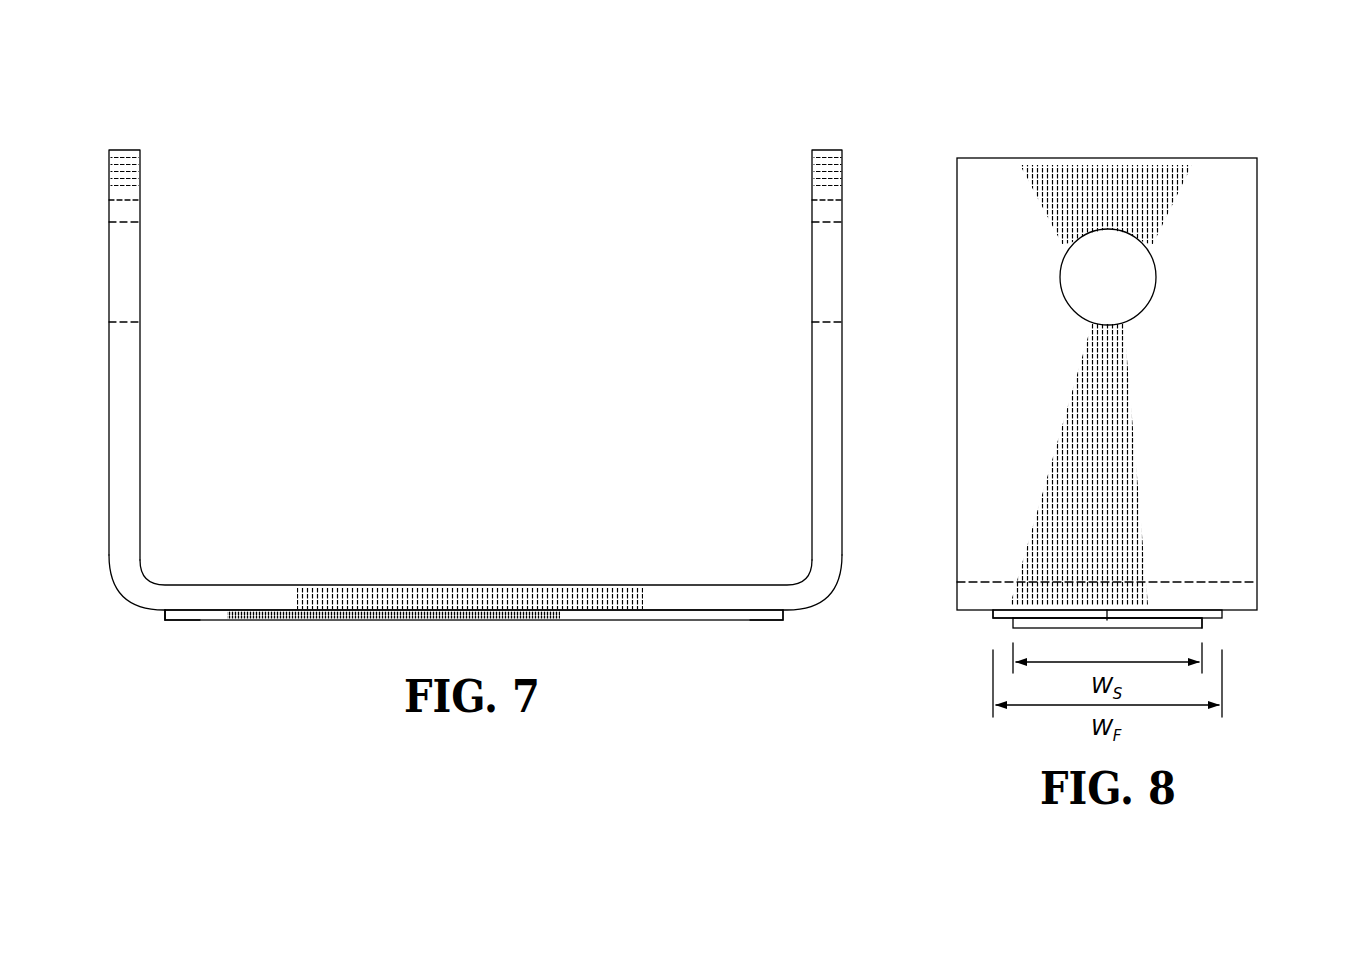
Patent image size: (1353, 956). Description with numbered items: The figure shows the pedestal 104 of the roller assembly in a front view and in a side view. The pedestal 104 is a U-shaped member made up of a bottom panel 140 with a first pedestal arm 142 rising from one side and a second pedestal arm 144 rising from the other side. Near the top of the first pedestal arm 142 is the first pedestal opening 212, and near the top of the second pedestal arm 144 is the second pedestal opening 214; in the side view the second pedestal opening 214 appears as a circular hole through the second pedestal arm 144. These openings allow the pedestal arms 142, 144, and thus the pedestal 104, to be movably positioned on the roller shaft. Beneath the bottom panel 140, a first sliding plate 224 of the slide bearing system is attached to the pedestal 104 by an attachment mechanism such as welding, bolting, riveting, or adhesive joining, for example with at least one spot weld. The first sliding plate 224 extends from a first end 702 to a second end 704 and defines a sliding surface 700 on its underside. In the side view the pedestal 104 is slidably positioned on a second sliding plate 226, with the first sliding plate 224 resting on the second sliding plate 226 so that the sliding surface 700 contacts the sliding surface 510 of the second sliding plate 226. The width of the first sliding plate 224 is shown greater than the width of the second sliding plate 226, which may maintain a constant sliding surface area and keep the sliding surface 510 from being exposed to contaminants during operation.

In FIG. 7, the pedestal 104 is at (827, 166).
In FIG. 8, the pedestal 104 is at (1155, 172).
In FIG. 7, the bottom panel 140 is at (247, 596).
In FIG. 8, the bottom panel 140 is at (1240, 592).
In FIG. 7, the first pedestal arm 142 is at (123, 414).
In FIG. 7, the second pedestal arm 144 is at (825, 356).
In FIG. 8, the second pedestal arm 144 is at (1240, 310).
In FIG. 7, the first pedestal opening 212 is at (122, 222).
In FIG. 7, the second pedestal opening 214 is at (825, 218).
In FIG. 8, the second pedestal opening 214 is at (1150, 250).
In FIG. 7, the first sliding plate 224 is at (165, 612).
In FIG. 8, the first sliding plate 224 is at (993, 613).
In FIG. 8, the second sliding plate 226 is at (1172, 627).
In FIG. 8, the sliding surface 510 is at (1057, 617).
In FIG. 7, the sliding surface 700 is at (643, 621).
In FIG. 8, the sliding surface 700 is at (1175, 628).
In FIG. 7, the first end 702 is at (165, 612).
In FIG. 7, the second end 704 is at (783, 615).